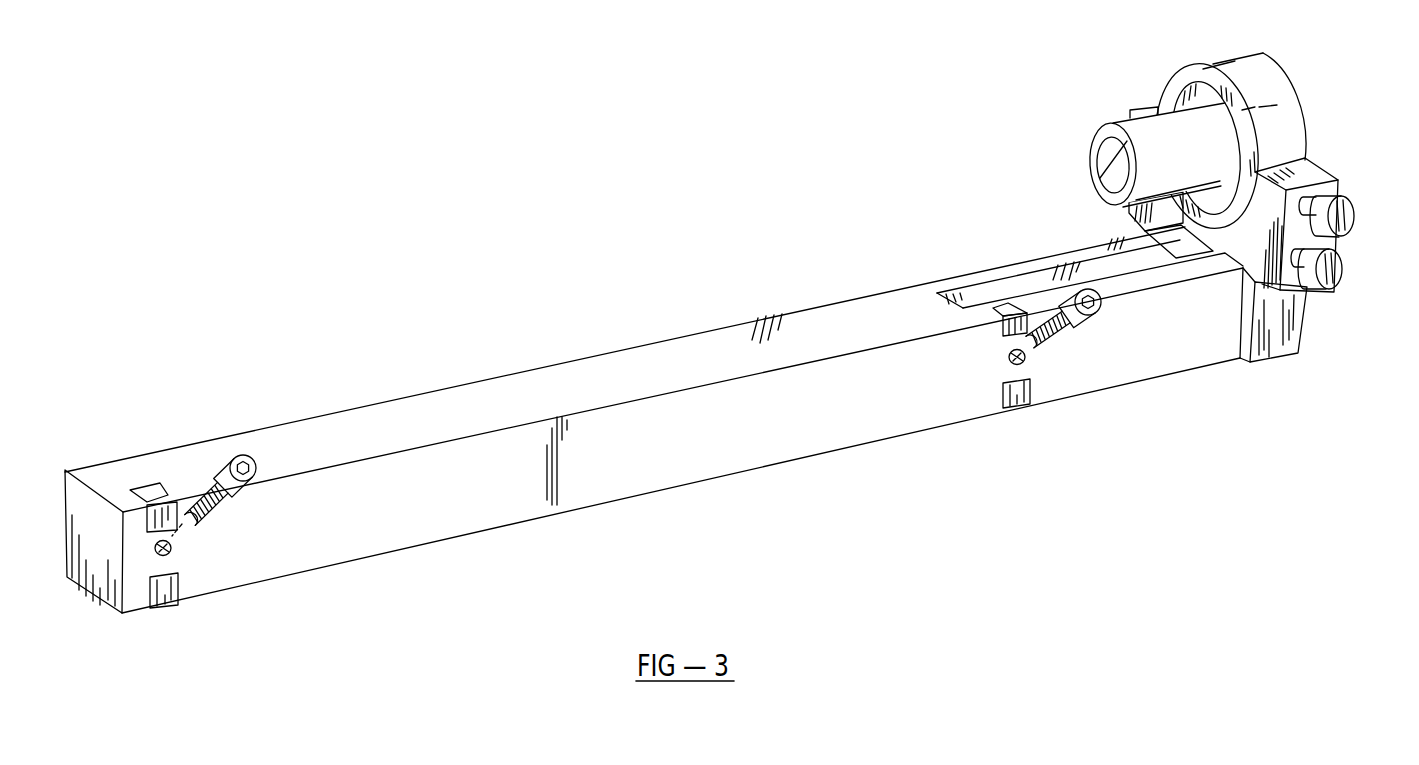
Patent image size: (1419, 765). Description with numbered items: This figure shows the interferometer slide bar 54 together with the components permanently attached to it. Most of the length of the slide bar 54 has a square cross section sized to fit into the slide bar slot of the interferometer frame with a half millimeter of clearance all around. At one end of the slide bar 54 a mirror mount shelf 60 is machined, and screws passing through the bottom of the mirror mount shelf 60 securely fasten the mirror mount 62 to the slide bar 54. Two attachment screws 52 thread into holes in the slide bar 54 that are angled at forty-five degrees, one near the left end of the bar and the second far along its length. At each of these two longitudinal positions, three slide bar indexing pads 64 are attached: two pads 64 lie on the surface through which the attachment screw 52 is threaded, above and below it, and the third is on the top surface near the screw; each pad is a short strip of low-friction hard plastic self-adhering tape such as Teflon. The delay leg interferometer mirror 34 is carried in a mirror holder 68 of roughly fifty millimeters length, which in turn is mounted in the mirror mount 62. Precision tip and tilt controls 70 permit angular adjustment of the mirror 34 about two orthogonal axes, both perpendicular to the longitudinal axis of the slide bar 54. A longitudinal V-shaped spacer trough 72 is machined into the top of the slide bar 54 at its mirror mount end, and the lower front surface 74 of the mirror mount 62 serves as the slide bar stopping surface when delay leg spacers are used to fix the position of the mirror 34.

The delay leg interferometer mirror 34 is at (1115, 160).
The attachment screws 52 is at (223, 503).
The slide bar 54 is at (570, 360).
The mirror mount shelf 60 is at (1268, 347).
The mirror mount 62 is at (1312, 167).
The slide bar indexing pads 64 is at (153, 588).
The mirror holder 68 is at (1138, 130).
The tip and tilt controls 70 is at (1336, 271).
The spacer trough 72 is at (993, 292).
The lower front surface 74 is at (1190, 243).